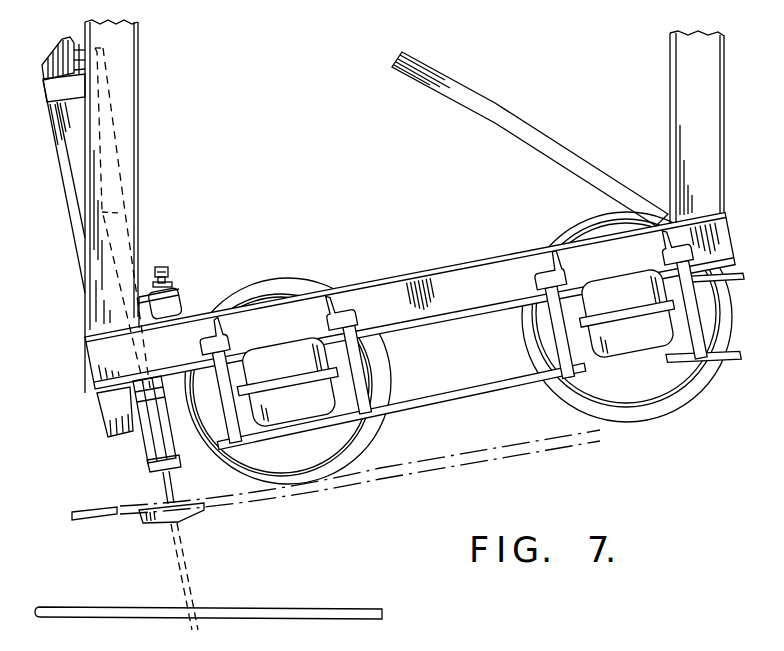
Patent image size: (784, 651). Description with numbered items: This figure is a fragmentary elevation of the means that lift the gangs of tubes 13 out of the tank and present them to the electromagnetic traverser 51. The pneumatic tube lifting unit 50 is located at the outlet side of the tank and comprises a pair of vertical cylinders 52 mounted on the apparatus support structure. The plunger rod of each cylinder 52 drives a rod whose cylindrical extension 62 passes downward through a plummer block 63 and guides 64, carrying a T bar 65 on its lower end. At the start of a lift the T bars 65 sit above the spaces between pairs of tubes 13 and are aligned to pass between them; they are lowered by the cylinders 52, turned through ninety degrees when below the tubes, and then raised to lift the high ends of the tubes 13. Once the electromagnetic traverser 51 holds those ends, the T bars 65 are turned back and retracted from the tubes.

The tubes 13 is at (437, 472).
The pneumatic tube lifting unit 50 is at (152, 503).
The electromagnetic traverser 51 is at (395, 412).
The vertical cylinders 52 is at (108, 100).
The cylindrical extension 62 is at (170, 495).
The plummer block 63 is at (153, 395).
The guides 64 is at (186, 452).
The T bar 65 is at (167, 521).